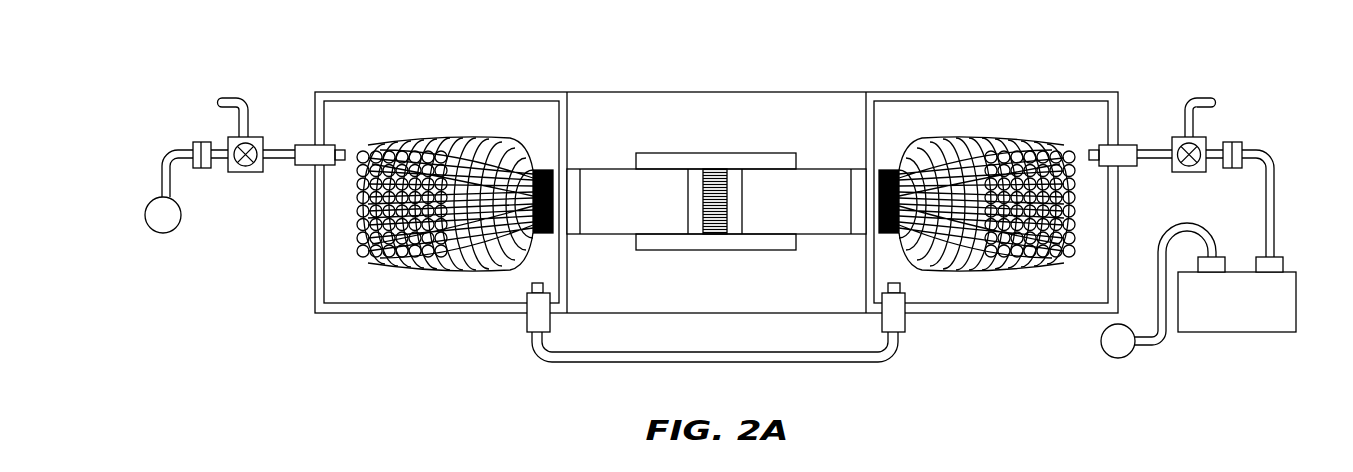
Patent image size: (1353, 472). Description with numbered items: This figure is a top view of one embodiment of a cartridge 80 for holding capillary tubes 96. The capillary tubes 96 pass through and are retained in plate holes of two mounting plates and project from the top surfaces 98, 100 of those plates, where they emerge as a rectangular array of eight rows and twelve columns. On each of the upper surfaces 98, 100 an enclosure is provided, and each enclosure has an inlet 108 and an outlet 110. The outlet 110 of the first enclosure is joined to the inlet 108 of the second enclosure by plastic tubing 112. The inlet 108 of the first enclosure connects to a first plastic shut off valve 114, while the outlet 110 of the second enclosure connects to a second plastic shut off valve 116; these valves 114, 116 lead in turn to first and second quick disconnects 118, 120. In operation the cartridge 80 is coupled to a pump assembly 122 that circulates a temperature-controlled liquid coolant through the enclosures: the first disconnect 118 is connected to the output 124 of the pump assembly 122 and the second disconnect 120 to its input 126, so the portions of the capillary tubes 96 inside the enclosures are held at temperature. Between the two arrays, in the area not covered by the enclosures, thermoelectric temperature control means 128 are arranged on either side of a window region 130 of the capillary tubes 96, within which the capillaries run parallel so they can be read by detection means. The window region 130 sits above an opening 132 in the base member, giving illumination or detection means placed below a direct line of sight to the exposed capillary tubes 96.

The cartridge 80 is at (889, 63).
The capillary tubes 96 is at (458, 137).
The top surface of first mounting plate 98 is at (455, 173).
The top surface of second mounting plate 100 is at (990, 293).
The inlet 108 is at (308, 145).
The outlet 110 is at (1127, 145).
The plastic tubing 112 is at (855, 363).
The first plastic shut off valve 114 is at (228, 138).
The second plastic shut off valve 116 is at (1205, 137).
The first quick disconnect 118 is at (193, 142).
The second quick disconnect 120 is at (1242, 142).
The pump assembly 122 is at (1213, 273).
The output of pump assembly 124 is at (1227, 257).
The input of pump assembly 126 is at (1283, 257).
The thermoelectric temperature control means 128 is at (813, 169).
The window region 130 is at (714, 162).
The opening 132 is at (641, 153).